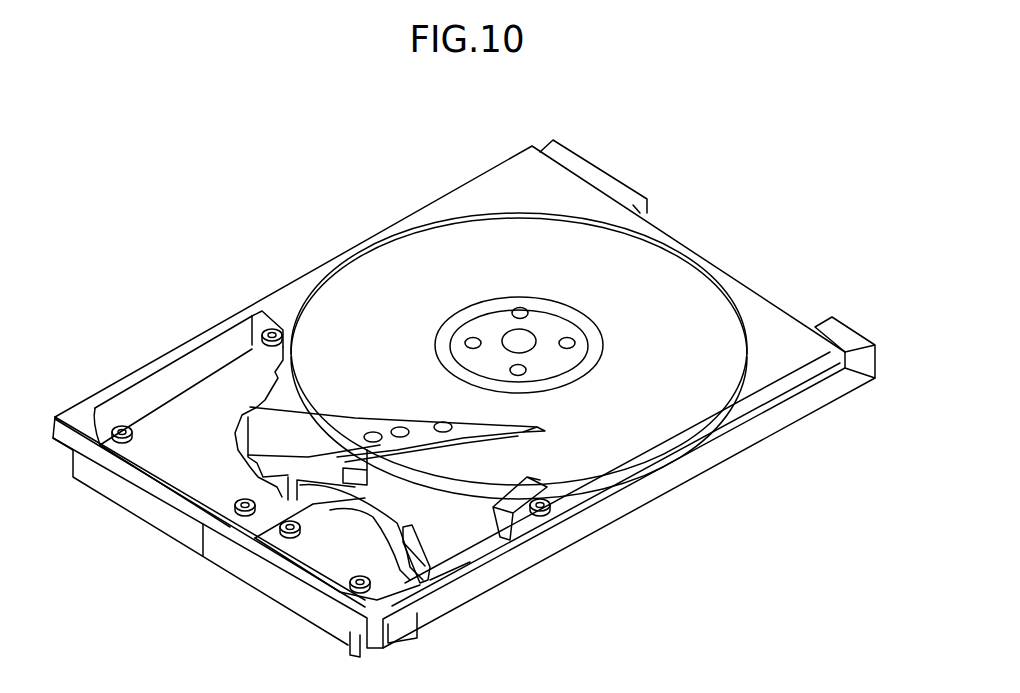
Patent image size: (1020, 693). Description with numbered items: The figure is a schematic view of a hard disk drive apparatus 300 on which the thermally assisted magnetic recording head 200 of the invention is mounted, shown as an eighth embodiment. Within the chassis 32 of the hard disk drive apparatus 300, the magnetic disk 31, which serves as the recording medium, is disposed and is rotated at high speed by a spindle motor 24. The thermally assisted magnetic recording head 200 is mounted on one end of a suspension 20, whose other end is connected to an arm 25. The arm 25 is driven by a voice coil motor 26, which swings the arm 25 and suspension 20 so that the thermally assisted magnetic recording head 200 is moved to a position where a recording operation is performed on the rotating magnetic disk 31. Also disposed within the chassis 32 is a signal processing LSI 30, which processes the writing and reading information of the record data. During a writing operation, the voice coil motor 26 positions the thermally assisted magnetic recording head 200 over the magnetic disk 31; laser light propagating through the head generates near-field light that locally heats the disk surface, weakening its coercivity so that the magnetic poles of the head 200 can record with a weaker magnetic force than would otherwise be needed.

The suspension 20 is at (481, 428).
The spindle motor 24 is at (520, 345).
The arm 25 is at (318, 430).
The voice coil motor 26 is at (208, 438).
The signal processing LSI 30 is at (312, 553).
The magnetic disk 31 is at (695, 298).
The chassis 32 is at (507, 177).
The thermally assisted magnetic recording head 200 is at (527, 428).
The hard disk drive apparatus 300 is at (651, 215).